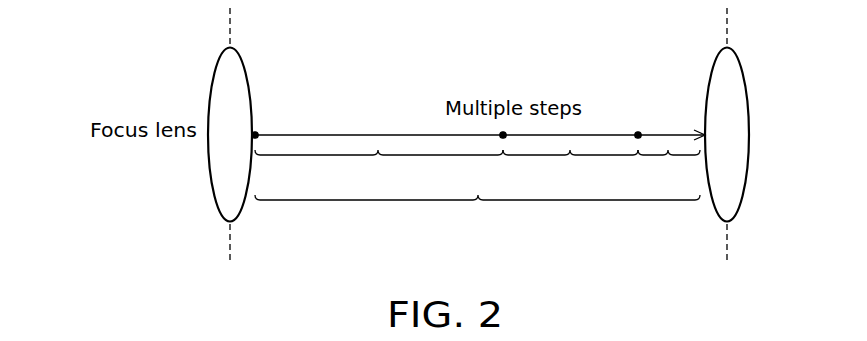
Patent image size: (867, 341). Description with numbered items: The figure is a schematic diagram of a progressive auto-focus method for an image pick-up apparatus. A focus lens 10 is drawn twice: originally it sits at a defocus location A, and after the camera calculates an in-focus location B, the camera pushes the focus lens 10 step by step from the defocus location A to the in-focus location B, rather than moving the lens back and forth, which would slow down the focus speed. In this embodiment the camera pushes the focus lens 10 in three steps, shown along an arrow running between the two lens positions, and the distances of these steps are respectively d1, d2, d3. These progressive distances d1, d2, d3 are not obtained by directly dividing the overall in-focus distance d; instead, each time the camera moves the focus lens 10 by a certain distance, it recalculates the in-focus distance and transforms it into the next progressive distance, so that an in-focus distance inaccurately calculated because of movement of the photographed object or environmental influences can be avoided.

The focus lens 10 is at (239, 52).
The defocus location A is at (229, 154).
The in-focus location B is at (726, 154).
The progressive distance d1 is at (379, 169).
The progressive distance d2 is at (570, 169).
The progressive distance d3 is at (669, 169).
The in-focus distance d is at (477, 214).